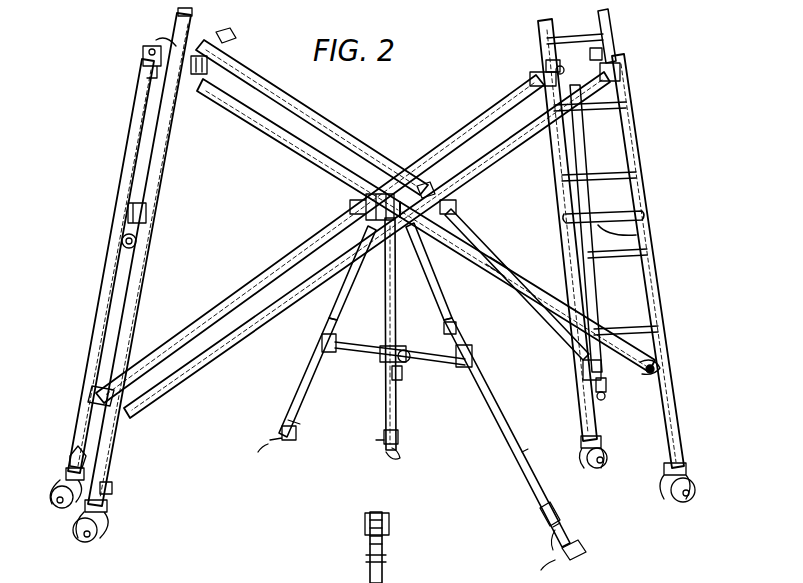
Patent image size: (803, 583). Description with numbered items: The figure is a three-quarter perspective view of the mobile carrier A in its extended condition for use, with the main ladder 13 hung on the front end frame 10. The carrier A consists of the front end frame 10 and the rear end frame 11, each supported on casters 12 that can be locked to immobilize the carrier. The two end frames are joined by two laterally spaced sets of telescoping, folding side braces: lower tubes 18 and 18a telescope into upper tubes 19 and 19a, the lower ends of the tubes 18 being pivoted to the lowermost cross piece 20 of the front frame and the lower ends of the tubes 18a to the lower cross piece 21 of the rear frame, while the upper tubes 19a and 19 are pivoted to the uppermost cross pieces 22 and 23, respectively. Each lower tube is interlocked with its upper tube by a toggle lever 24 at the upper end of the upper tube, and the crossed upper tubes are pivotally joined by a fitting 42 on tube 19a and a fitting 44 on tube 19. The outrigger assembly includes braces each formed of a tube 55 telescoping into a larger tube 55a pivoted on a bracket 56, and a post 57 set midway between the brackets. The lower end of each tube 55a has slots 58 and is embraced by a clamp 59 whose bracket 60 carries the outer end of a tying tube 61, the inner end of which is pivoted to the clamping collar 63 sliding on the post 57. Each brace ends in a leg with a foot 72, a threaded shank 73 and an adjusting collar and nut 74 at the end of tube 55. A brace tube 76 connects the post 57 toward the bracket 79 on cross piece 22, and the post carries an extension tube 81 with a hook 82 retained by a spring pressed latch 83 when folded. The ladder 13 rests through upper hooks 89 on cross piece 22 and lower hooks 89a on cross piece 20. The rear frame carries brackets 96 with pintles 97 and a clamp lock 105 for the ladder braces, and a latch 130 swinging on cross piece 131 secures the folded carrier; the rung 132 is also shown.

The carrier A is at (115, 97).
The front end frame 10 is at (638, 158).
The rear end frame 11 is at (111, 266).
The casters 12 is at (60, 503).
The main ladder 13 is at (620, 77).
The lower tube 18 is at (520, 272).
The lower tube 18a is at (189, 362).
The upper tube 19 is at (248, 112).
The upper tube 19a is at (458, 167).
The lowermost cross piece 20 is at (602, 381).
The lower cross piece 21 is at (96, 399).
The uppermost cross piece 22 is at (600, 51).
The uppermost cross piece 23 is at (166, 43).
The toggle lever 24 is at (230, 46).
The fitting 42 is at (422, 185).
The fitting 44 is at (350, 206).
The tube 55 is at (312, 390).
The tube 55a is at (345, 279).
The bracket 56 is at (452, 327).
The post 57 is at (386, 317).
The longitudinal slots 58 is at (438, 355).
The clamp 59 is at (322, 341).
The bracket 60 is at (448, 375).
The outrigger tying tube 61 is at (352, 357).
The clamping collar 63 is at (400, 371).
The foot 72 is at (282, 441).
The threaded shank 73 is at (388, 545).
The adjusting collar and nut 74 is at (542, 527).
The tube 76 is at (456, 212).
The bracket 79 is at (550, 63).
The extension tube 81 is at (400, 443).
The hook 82 is at (398, 461).
The spring pressed latch 83 is at (384, 439).
The fixed hooks 89 is at (531, 71).
The fixed hooks 89a is at (590, 381).
The brackets 96 is at (112, 487).
The pintle 97 is at (114, 471).
The clamp lock 105 is at (202, 71).
The latch 130 is at (136, 242).
The cross piece 131 is at (122, 214).
The rung 132 is at (644, 225).